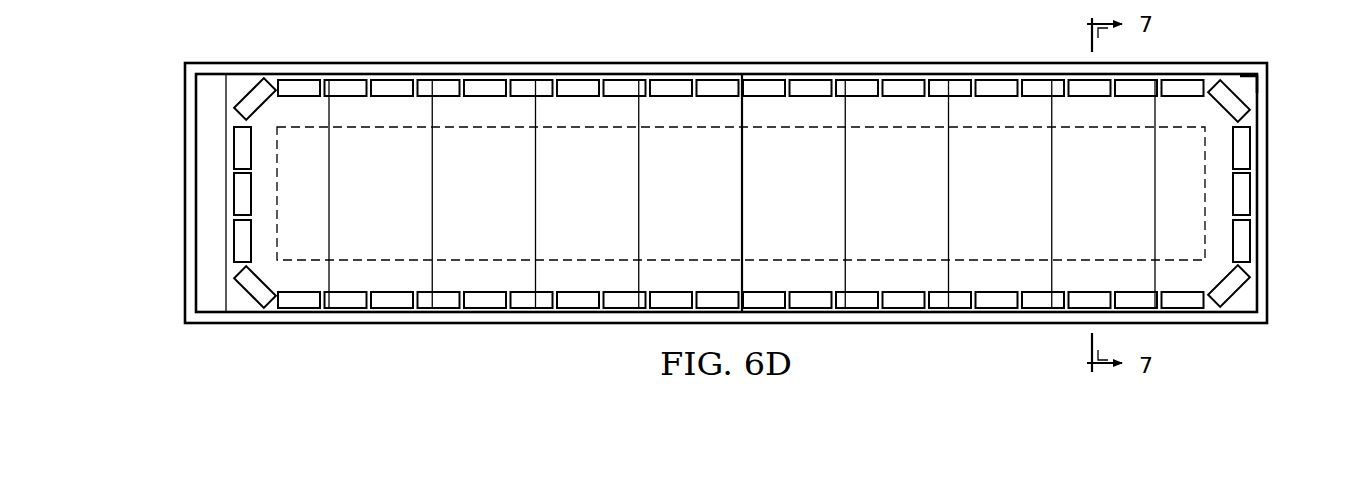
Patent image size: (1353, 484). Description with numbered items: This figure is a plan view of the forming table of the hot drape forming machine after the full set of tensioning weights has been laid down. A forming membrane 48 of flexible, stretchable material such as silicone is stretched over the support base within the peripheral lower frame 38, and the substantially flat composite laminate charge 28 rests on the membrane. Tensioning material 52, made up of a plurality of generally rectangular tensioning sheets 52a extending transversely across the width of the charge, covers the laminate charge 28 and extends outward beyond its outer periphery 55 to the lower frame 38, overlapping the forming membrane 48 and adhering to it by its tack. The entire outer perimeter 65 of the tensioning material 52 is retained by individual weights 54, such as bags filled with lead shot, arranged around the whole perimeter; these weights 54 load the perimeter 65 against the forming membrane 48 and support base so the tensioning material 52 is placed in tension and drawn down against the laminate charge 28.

The composite laminate charge 28 is at (1205, 193).
The peripheral lower frame 38 is at (1000, 317).
The forming membrane 48 is at (203, 267).
The tensioning material 52 is at (223, 141).
The tensioning sheets 52a is at (1244, 77).
The weights 54 is at (487, 88).
The outer periphery 55 is at (806, 112).
The outer perimeter 65 is at (357, 112).